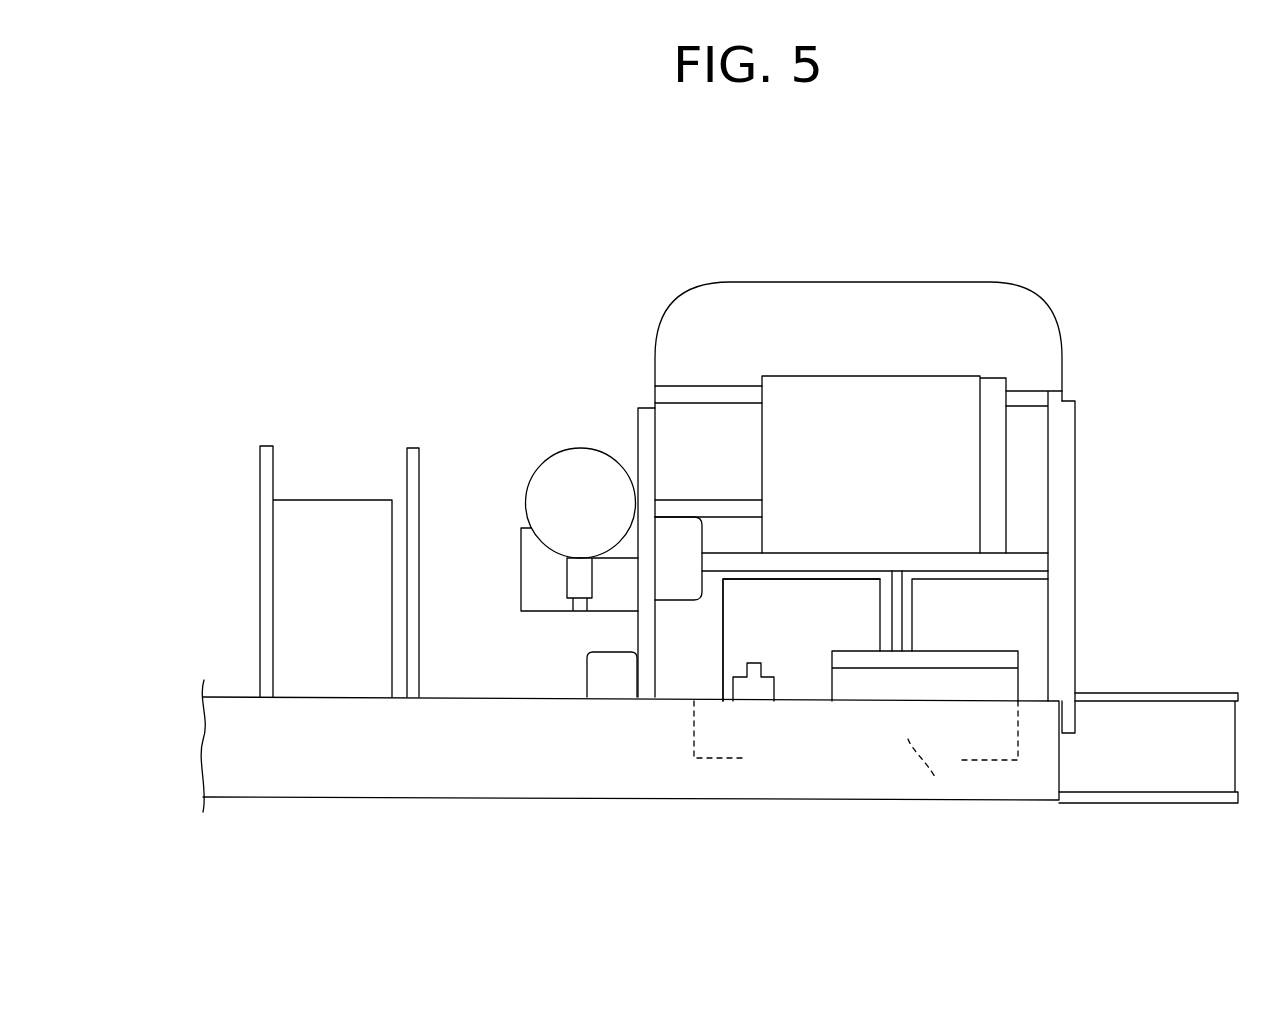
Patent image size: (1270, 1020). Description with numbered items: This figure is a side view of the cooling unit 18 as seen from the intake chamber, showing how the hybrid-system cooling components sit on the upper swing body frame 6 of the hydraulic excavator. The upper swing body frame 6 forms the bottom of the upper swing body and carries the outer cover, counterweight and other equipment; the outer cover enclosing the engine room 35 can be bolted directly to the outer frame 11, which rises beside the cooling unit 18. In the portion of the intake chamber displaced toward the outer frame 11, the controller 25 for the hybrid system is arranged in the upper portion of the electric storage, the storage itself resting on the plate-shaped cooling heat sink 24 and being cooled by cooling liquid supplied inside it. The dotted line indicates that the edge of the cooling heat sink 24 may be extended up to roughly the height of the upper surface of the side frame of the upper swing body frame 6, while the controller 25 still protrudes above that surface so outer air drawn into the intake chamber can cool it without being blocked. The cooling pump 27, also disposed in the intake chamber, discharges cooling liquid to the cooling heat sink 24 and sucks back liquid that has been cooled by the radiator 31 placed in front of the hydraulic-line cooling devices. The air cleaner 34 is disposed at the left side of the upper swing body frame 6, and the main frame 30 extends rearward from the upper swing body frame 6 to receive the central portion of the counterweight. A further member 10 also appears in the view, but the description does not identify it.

The upper swing body frame 6 is at (494, 762).
The support post 10 is at (643, 435).
The outer frame 11 is at (1068, 505).
The cooling unit 18 is at (1030, 277).
The cooling heat sink 24 is at (935, 777).
The controller 25 is at (1000, 693).
The cooling pump 27 is at (744, 693).
The main frame 30 is at (1143, 760).
The radiator 31 is at (803, 657).
The air cleaner 34 is at (594, 521).
The engine room 35 is at (983, 232).